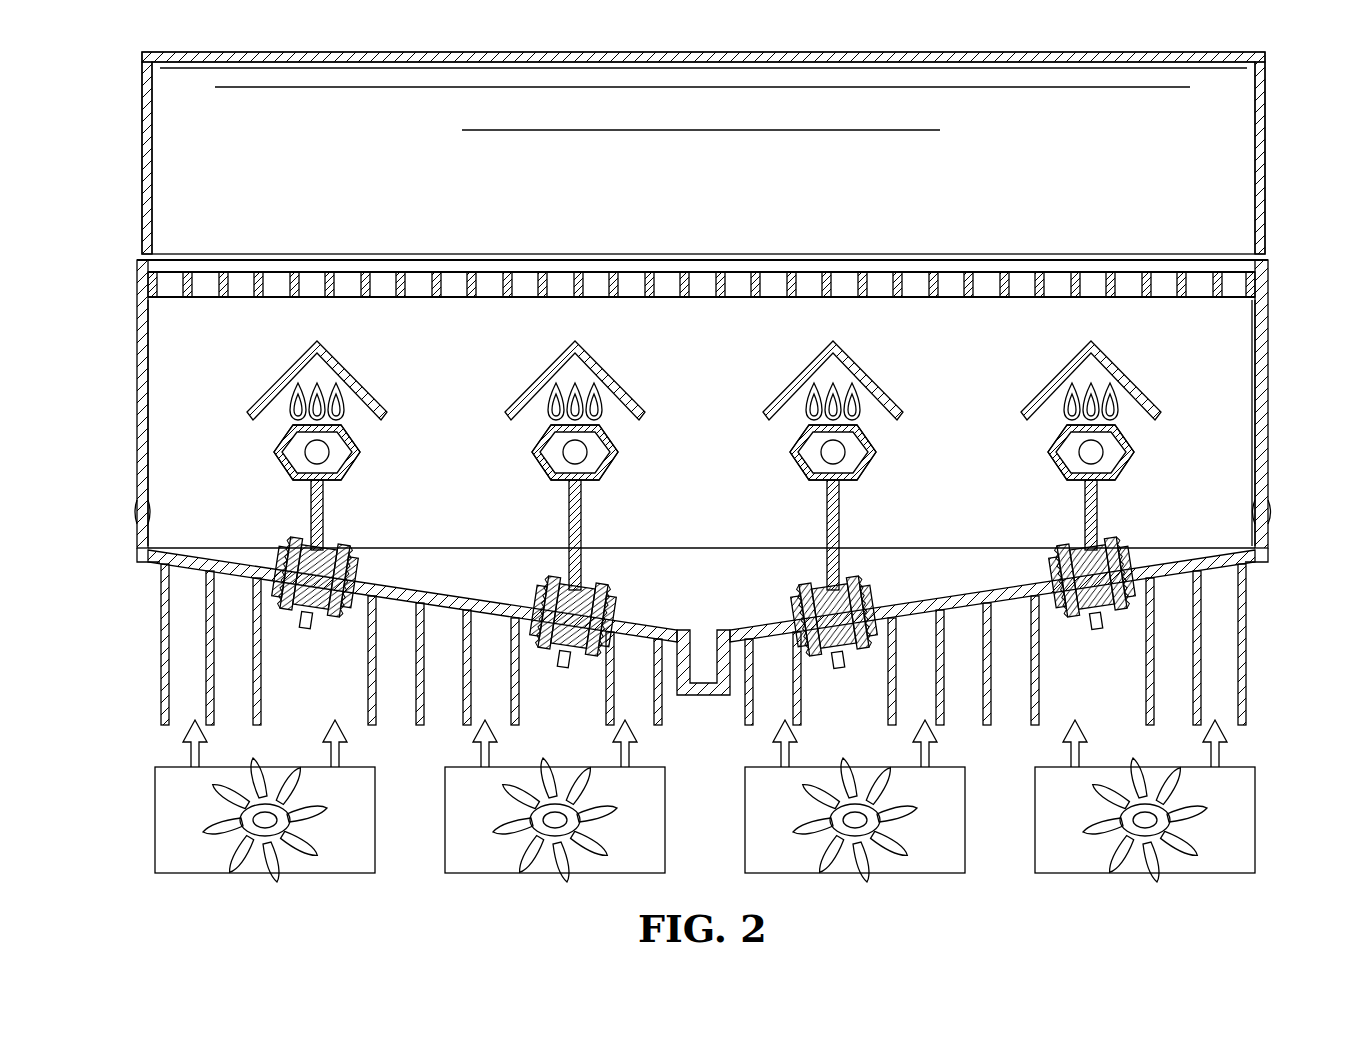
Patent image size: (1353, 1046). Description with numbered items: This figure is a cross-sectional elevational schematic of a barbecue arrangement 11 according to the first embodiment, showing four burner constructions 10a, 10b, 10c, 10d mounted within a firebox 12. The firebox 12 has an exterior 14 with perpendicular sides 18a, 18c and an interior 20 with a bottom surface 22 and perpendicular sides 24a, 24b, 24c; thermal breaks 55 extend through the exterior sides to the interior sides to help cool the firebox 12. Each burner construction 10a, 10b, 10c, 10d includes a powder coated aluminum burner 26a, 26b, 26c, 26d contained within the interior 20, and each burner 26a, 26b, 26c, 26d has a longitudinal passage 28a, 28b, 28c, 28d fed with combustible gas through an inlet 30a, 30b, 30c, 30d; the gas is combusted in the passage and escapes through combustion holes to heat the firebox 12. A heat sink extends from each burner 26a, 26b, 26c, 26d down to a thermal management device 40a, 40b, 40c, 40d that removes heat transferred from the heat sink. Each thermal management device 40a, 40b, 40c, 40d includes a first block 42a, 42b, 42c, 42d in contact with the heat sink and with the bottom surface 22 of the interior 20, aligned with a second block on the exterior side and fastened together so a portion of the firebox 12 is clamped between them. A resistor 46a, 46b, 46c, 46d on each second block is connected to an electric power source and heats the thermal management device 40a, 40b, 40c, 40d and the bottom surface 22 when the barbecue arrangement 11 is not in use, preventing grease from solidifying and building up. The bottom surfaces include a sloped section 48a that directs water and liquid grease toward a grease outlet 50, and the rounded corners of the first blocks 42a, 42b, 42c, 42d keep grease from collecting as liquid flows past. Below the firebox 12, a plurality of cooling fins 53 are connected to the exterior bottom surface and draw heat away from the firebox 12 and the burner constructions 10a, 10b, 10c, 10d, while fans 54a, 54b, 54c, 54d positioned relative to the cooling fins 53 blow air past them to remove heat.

The barbecue arrangement 11 is at (1279, 88).
The firebox 12 is at (689, 387).
The exterior 14 is at (1276, 357).
The perpendicular side 18a is at (148, 352).
The perpendicular side 18c is at (1262, 468).
The interior 20 is at (229, 334).
The bottom surface 22 is at (429, 588).
The perpendicular side 24a is at (150, 432).
The perpendicular side 24b is at (912, 335).
The perpendicular side 24c is at (1255, 432).
The burner construction 10a is at (294, 445).
The burner construction 10b is at (551, 465).
The burner construction 10c is at (863, 465).
The burner construction 10d is at (1123, 445).
The burner 26a is at (347, 465).
The burner 26b is at (605, 465).
The burner 26c is at (815, 465).
The burner 26d is at (1075, 465).
The longitudinal passage 28a is at (295, 462).
The longitudinal passage 28b is at (552, 462).
The longitudinal passage 28c is at (865, 462).
The longitudinal passage 28d is at (1118, 462).
The inlet 30a is at (320, 450).
The inlet 30b is at (578, 450).
The inlet 30c is at (830, 450).
The inlet 30d is at (1088, 450).
The thermal management device 40a is at (293, 609).
The thermal management device 40b is at (565, 639).
The thermal management device 40c is at (847, 631).
The thermal management device 40d is at (1124, 609).
The first block 42a is at (352, 569).
The first block 42b is at (609, 610).
The first block 42c is at (803, 609).
The first block 42d is at (1060, 568).
The resistor 46a is at (307, 655).
The resistor 46b is at (568, 694).
The resistor 46c is at (846, 693).
The resistor 46d is at (1102, 655).
The sloped section 48a is at (941, 590).
The grease outlet 50 is at (705, 724).
The cooling fins 53 is at (112, 640).
The fan 54a is at (178, 860).
The fan 54b is at (478, 860).
The fan 54c is at (920, 860).
The fan 54d is at (1218, 860).
The thermal break 55 is at (1268, 527).